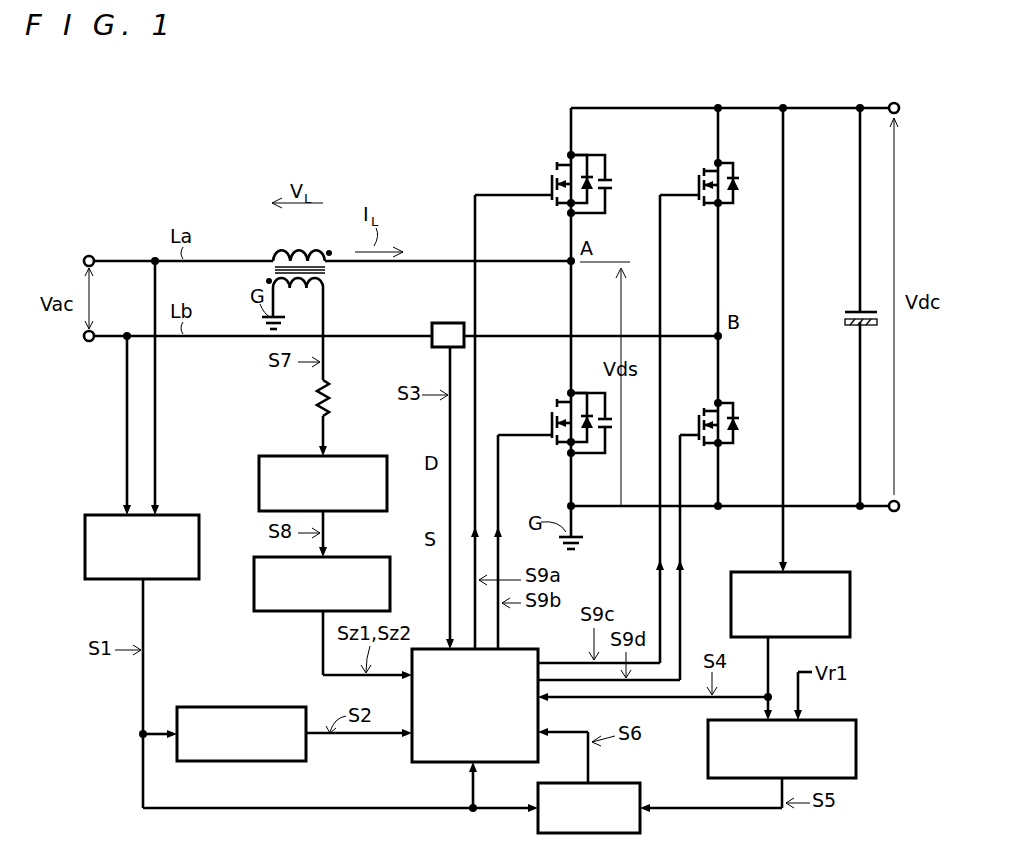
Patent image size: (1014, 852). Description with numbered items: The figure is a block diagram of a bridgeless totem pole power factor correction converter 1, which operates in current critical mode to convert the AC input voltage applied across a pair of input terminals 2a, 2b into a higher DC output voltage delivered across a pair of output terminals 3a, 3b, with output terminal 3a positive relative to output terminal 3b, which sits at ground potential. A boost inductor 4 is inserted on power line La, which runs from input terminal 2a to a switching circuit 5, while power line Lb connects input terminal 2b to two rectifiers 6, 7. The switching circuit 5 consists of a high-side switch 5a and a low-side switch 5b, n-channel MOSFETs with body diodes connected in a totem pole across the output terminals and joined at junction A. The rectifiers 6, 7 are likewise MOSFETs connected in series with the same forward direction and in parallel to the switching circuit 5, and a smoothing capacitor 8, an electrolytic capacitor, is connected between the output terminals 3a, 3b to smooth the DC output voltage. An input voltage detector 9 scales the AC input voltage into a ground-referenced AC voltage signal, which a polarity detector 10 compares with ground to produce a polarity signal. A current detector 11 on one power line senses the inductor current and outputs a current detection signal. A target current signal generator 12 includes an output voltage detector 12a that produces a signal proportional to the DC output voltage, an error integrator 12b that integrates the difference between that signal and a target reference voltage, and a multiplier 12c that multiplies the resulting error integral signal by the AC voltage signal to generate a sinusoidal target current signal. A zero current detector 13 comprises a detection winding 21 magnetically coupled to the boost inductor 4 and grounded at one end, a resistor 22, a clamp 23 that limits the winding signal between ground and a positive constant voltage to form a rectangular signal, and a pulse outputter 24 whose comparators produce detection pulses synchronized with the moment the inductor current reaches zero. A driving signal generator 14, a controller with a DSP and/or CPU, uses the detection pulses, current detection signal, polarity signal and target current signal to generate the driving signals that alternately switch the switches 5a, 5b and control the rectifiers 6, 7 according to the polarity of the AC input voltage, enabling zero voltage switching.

The converter 1 is at (338, 101).
The input terminal 2a is at (89, 255).
The input terminal 2b is at (89, 342).
The output terminal 3a is at (893, 102).
The output terminal 3b is at (894, 512).
The boost inductor 4 is at (298, 248).
The switching circuit 5 is at (613, 99).
The high-side switch 5a is at (547, 188).
The low-side switch 5b is at (546, 424).
The rectifier 6 is at (694, 182).
The rectifier 7 is at (696, 420).
The smoothing capacitor 8 is at (868, 308).
The input voltage detector 9 is at (175, 515).
The polarity detector 10 is at (268, 707).
The current detector 11 is at (447, 323).
The target current signal generator 12 is at (861, 547).
The output voltage detector 12a is at (805, 572).
The error integrator 12b is at (808, 720).
The multiplier 12c is at (603, 783).
The zero current detector 13 is at (249, 283).
The driving signal generator 14 is at (522, 649).
The detection winding 21 is at (326, 285).
The resistor 22 is at (330, 394).
The clamp 23 is at (355, 456).
The pulse outputter 24 is at (355, 557).